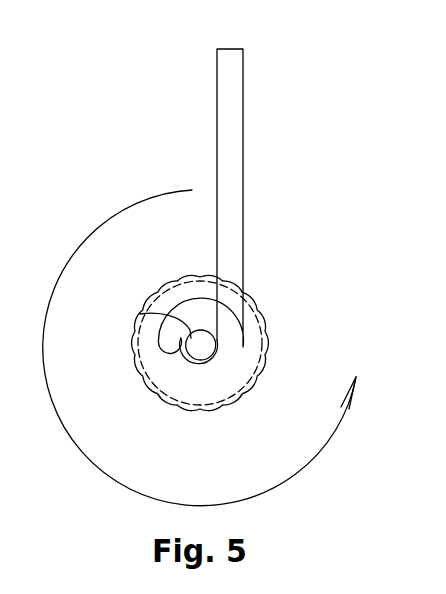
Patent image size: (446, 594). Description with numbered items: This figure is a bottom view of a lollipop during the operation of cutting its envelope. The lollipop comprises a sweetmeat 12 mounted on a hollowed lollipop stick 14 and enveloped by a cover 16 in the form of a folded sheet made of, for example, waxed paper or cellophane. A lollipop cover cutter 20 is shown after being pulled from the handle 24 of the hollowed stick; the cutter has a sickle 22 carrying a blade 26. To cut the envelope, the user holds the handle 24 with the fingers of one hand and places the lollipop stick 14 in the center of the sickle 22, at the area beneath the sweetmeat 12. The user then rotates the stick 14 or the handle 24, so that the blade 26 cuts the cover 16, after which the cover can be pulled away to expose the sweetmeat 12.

The lollipop cover cutter 20 is at (291, 135).
The handle 24 is at (234, 213).
The blade 26 is at (210, 365).
The lollipop sweetmeat 12 is at (263, 330).
The lollipop cover 16 is at (226, 406).
The lollipop stick 14 is at (151, 312).
The sickle 22 is at (190, 377).